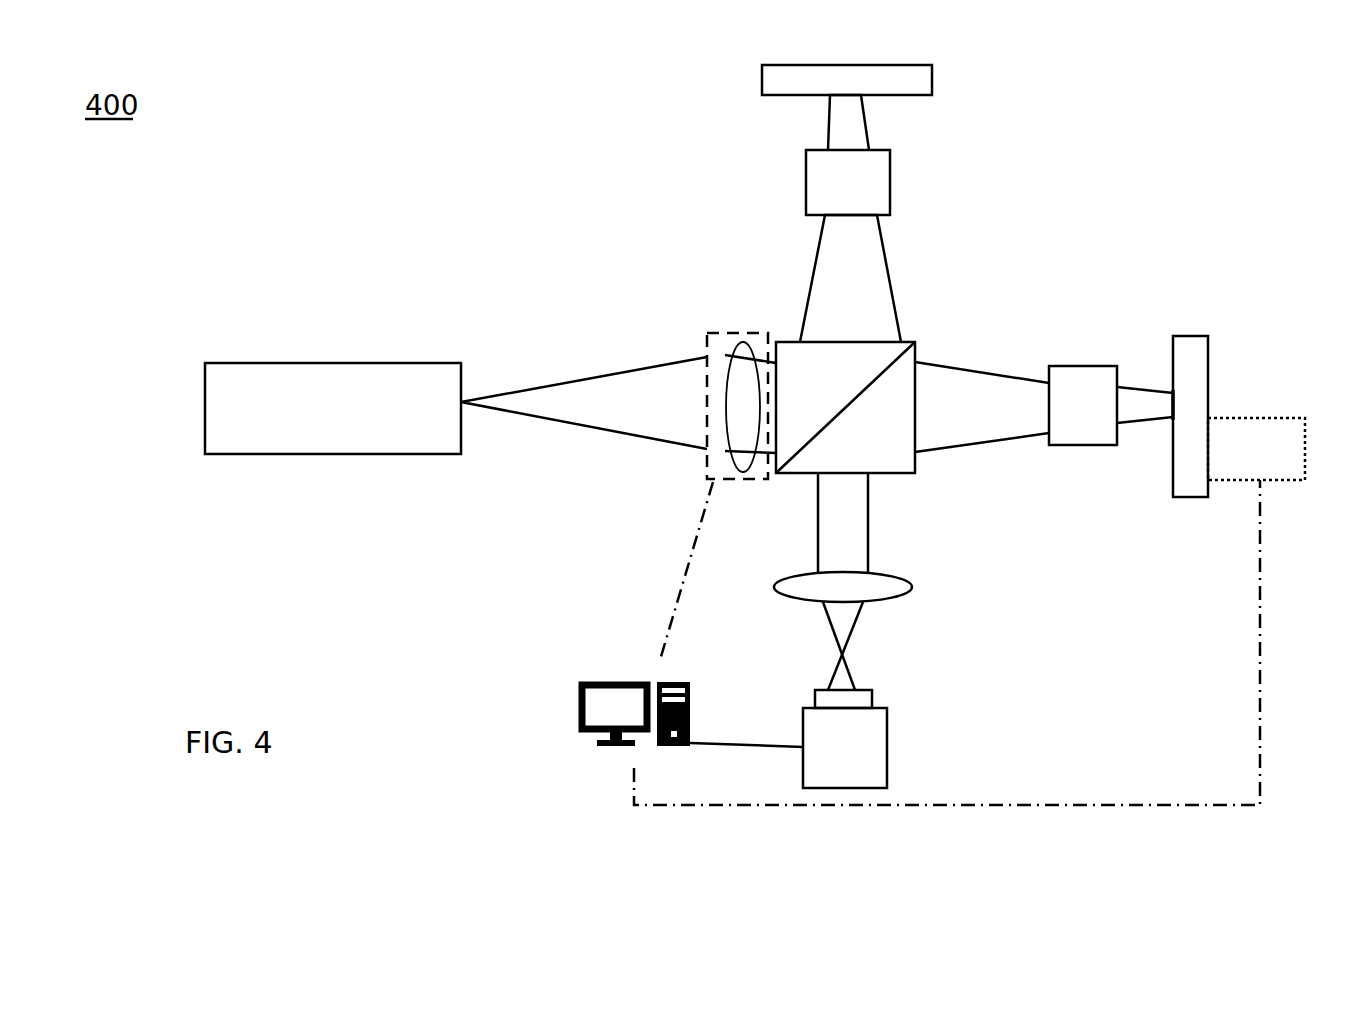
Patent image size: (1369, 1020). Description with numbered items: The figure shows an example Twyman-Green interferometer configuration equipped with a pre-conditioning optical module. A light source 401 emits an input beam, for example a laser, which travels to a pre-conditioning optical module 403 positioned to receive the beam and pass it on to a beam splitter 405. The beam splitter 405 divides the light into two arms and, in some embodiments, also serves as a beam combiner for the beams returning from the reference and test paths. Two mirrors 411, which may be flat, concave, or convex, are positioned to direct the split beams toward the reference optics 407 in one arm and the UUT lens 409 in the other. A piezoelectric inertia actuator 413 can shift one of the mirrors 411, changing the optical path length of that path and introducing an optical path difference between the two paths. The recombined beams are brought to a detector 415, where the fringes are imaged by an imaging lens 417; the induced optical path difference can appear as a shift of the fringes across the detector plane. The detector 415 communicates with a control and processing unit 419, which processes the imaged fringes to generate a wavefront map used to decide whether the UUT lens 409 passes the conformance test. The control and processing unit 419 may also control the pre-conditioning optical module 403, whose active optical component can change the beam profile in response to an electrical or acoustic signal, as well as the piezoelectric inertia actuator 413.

The light source 401 is at (328, 362).
The pre-conditioning optical module 403 is at (728, 332).
The beam splitter 405 is at (922, 330).
The reference optics 407 is at (1095, 392).
The UUT lens 409 is at (810, 185).
The mirrors 411 is at (1197, 340).
The piezoelectric inertia actuator 413 is at (1280, 425).
The detector 415 is at (887, 748).
The imaging lens 417 is at (888, 603).
The control and processing unit 419 is at (593, 680).